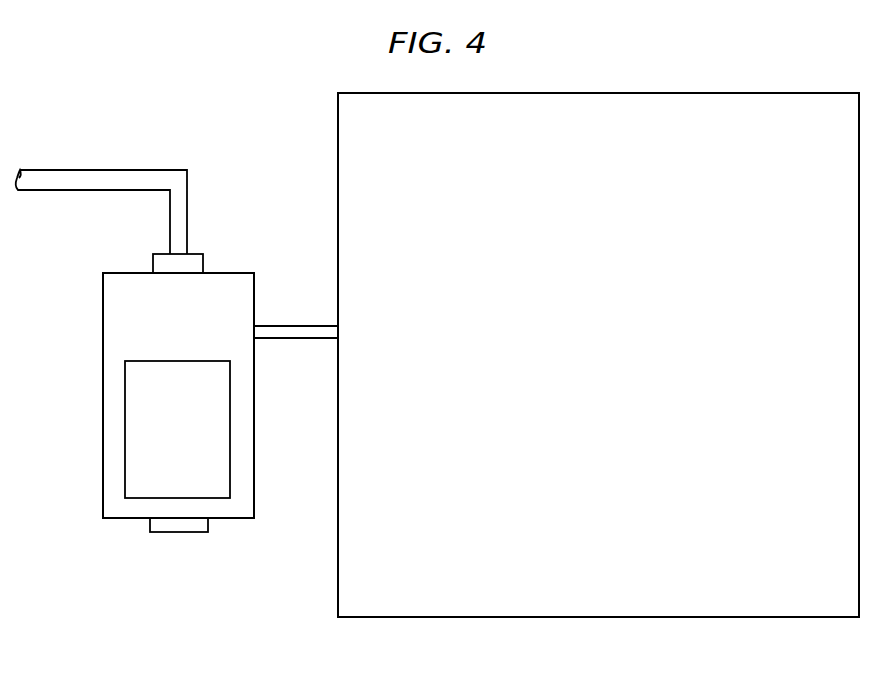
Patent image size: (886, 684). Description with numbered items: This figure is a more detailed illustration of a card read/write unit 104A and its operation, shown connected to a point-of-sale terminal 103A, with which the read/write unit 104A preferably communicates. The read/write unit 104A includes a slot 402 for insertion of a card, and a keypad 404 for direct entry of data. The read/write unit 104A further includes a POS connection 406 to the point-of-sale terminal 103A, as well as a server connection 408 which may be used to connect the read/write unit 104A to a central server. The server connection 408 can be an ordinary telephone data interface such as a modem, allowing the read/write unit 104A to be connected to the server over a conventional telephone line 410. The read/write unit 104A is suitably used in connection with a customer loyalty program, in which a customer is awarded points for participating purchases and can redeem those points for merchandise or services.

The point-of-sale terminal 103A is at (338, 553).
The read/write unit 104A is at (103, 318).
The keypad 404 is at (169, 361).
The server connection 408 is at (206, 262).
The slot 402 is at (186, 533).
The telephone line 410 is at (91, 170).
The POS connection 406 is at (296, 326).